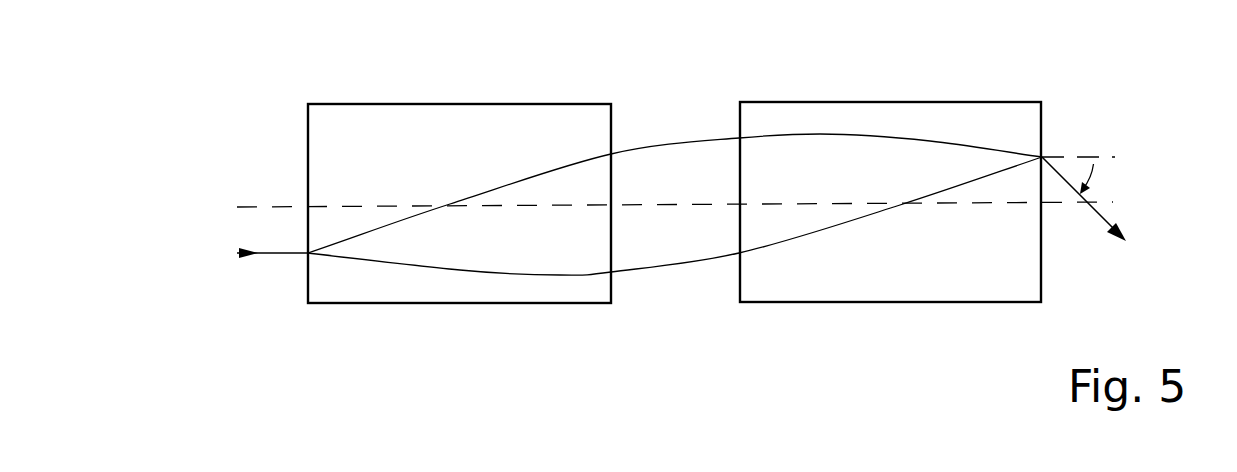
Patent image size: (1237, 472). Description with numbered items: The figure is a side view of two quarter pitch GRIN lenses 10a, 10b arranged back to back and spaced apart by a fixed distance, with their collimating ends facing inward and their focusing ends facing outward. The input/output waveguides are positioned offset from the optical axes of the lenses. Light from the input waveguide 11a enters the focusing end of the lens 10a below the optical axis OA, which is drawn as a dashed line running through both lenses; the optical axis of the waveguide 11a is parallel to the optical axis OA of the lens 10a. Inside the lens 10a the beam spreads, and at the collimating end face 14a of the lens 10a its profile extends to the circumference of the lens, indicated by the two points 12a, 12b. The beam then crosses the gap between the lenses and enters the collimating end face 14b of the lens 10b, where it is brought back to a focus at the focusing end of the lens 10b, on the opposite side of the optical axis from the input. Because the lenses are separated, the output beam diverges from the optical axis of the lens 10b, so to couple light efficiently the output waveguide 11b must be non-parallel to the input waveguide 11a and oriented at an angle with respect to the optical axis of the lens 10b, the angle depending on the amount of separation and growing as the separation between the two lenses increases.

The quarter pitch GRIN lens 10a is at (432, 123).
The quarter pitch GRIN lens 10b is at (927, 108).
The input optical waveguide 11a is at (277, 252).
The output optical waveguide 11b is at (1107, 217).
The circumference point 12a is at (611, 153).
The circumference point 12b is at (611, 273).
The collimating end face 14a is at (739, 138).
The collimating end face 14b is at (740, 253).
The optical axis OA is at (247, 206).